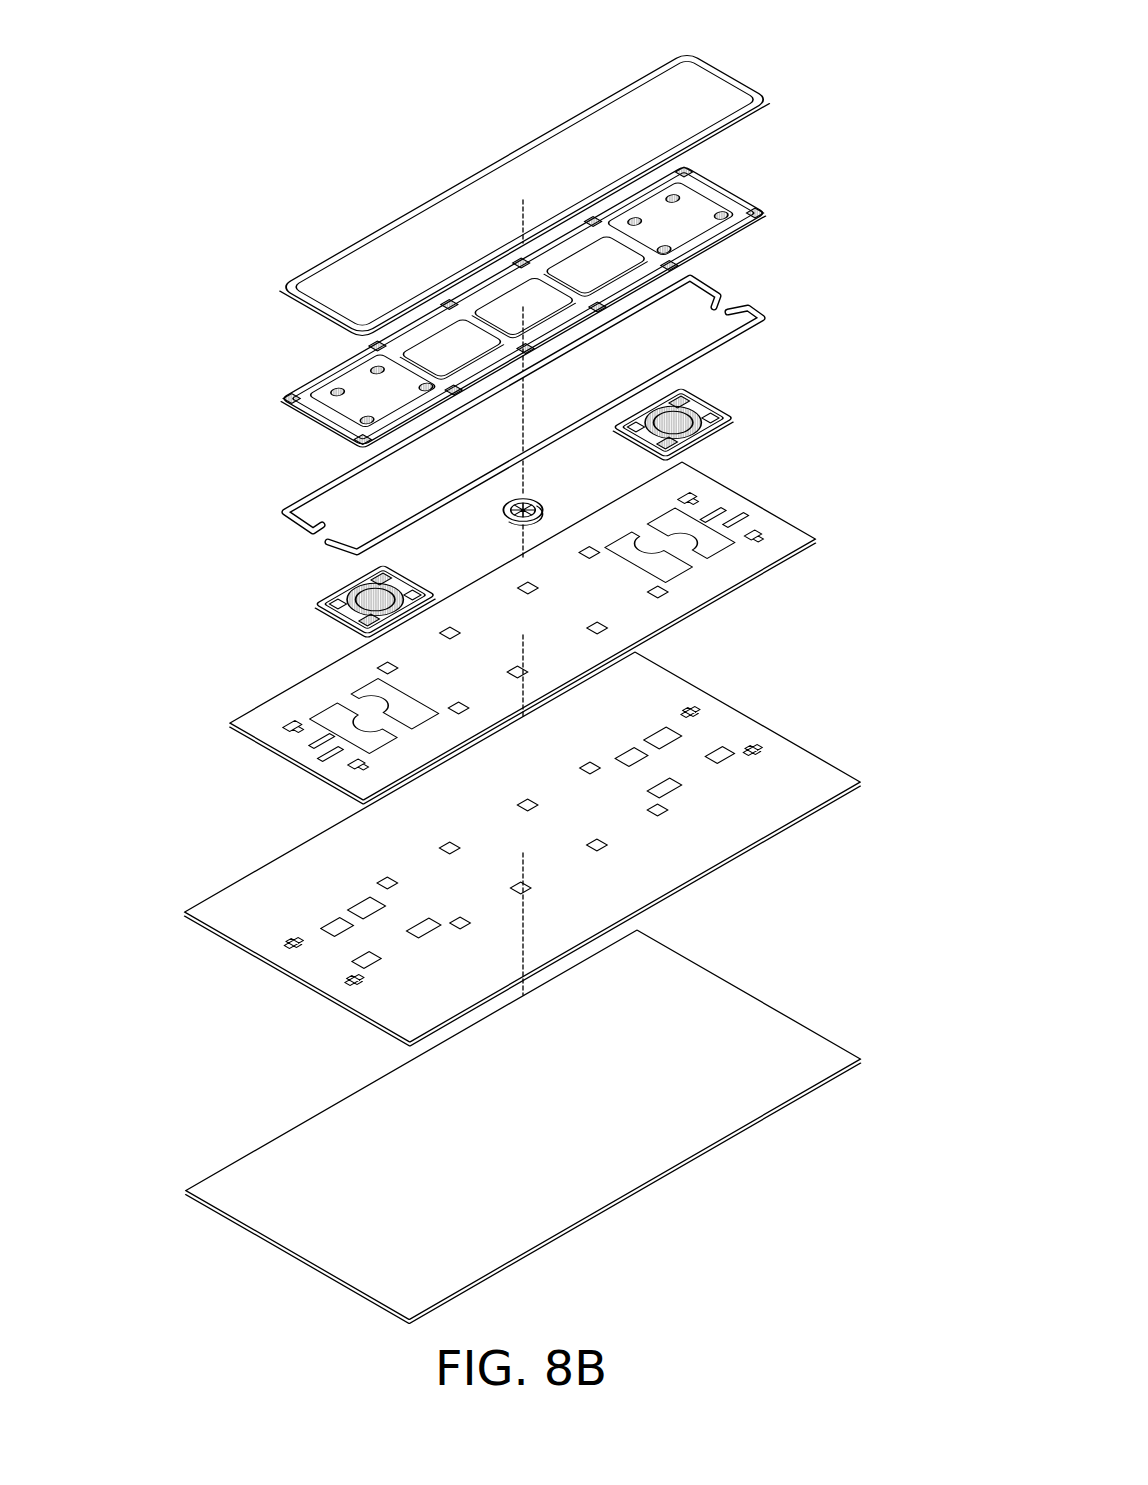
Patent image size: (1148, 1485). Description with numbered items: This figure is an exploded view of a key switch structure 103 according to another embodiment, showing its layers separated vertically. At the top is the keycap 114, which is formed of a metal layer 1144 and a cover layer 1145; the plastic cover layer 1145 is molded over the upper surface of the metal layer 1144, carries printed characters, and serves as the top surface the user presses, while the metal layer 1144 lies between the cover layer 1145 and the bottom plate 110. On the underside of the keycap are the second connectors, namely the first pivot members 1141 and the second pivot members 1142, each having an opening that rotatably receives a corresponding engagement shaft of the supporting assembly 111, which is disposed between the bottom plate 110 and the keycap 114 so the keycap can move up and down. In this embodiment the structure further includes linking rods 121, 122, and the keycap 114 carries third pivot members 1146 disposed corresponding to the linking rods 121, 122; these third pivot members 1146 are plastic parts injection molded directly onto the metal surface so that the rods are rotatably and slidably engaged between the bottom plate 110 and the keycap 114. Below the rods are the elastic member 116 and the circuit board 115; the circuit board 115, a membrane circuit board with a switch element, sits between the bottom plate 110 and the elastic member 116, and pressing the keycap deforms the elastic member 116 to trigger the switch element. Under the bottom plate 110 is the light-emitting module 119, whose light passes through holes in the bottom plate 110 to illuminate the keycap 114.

The key switch structure 103 is at (126, 39).
The bottom plate 110 is at (757, 700).
The supporting assembly 111 is at (725, 395).
The keycap 114 is at (866, 70).
The circuit board 115 is at (772, 493).
The elastic member 116 is at (548, 500).
The light-emitting module 119 is at (767, 983).
The linking rod 121 is at (466, 276).
The linking rod 122 is at (381, 276).
The first pivot member 1141 is at (525, 297).
The second pivot member 1142 is at (562, 272).
The metal layer 1144 is at (538, 301).
The cover layer 1145 is at (731, 96).
The third pivot member 1146 is at (523, 305).